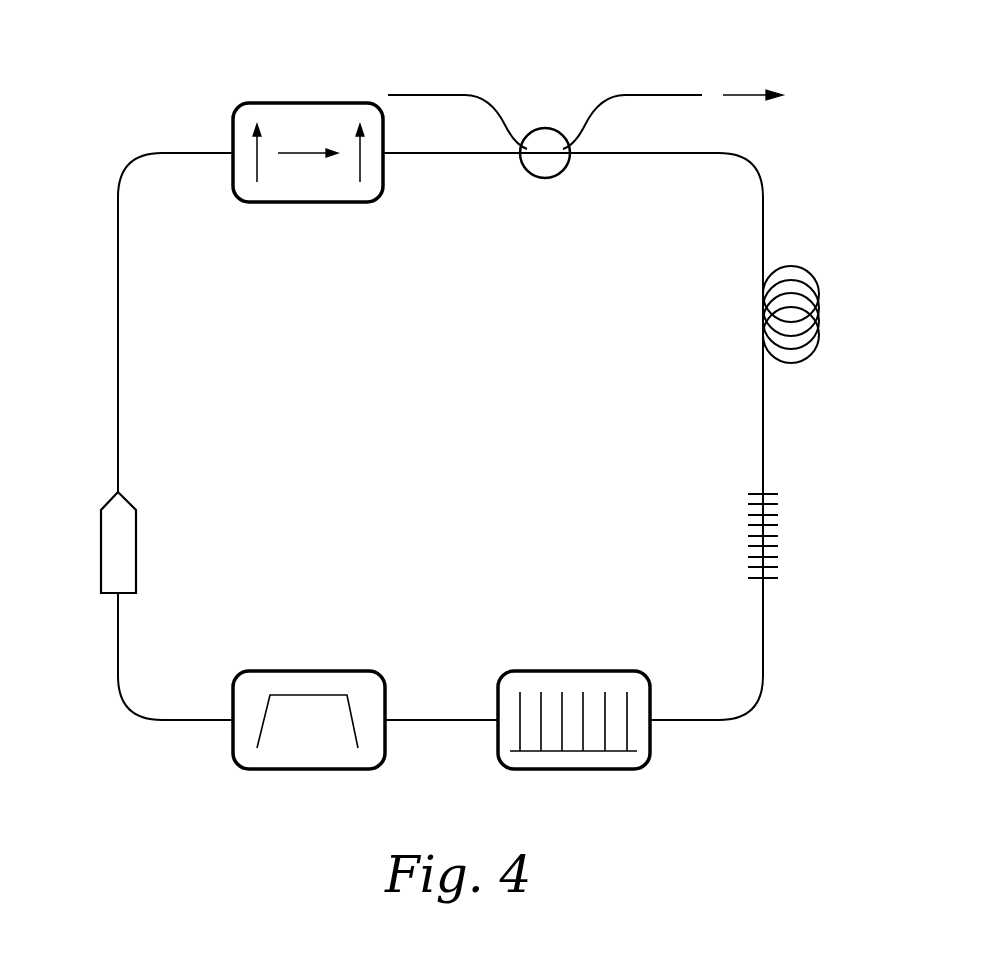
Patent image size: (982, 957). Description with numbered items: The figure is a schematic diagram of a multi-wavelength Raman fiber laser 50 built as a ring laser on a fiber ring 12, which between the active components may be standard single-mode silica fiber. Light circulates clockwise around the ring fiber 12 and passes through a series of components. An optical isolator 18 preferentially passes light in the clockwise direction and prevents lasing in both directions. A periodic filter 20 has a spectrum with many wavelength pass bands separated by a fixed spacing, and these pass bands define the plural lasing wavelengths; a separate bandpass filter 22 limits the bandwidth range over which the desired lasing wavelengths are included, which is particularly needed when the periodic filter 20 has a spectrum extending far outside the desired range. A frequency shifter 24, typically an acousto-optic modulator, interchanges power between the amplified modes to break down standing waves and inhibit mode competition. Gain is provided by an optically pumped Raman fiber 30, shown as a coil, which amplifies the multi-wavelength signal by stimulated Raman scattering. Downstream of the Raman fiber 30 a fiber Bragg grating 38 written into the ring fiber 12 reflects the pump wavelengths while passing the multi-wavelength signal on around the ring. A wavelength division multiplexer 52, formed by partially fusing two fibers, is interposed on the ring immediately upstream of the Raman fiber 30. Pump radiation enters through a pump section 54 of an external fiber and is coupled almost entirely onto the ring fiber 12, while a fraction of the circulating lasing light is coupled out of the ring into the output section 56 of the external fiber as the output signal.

The fiber ring 12 is at (757, 176).
The optical isolator 18 is at (101, 545).
The periodic filter 20 is at (575, 772).
The bandpass filter 22 is at (303, 772).
The frequency shifter 24 is at (302, 205).
The Raman fiber 30 is at (820, 288).
The fiber Bragg grating 38 is at (768, 516).
The ring laser 50 is at (133, 117).
The wavelength division multiplexer 52 is at (548, 128).
The pump section of the external fiber 54 is at (434, 93).
The output section of the external fiber 56 is at (667, 93).